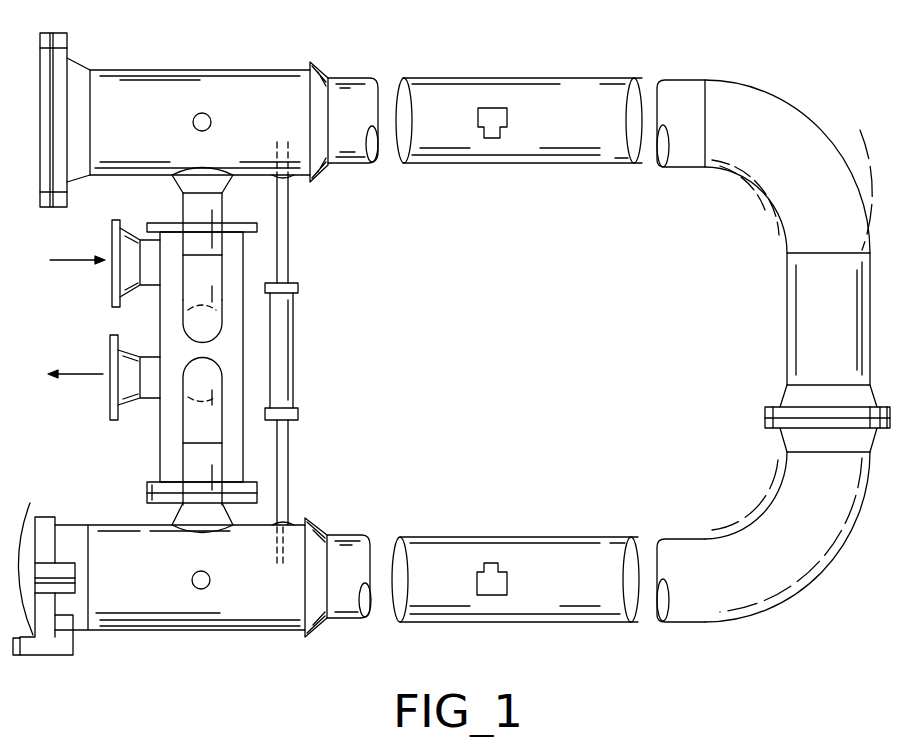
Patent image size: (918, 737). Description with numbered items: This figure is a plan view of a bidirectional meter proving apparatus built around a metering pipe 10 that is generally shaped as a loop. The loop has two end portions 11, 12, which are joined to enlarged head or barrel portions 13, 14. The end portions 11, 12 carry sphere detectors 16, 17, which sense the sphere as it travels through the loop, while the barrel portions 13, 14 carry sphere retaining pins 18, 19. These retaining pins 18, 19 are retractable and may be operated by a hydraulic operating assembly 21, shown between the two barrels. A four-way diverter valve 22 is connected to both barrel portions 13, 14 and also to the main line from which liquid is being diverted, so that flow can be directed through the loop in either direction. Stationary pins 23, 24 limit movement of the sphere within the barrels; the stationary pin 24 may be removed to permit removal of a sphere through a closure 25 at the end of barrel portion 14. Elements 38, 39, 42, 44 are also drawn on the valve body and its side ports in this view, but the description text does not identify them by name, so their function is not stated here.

The metering pipe 10 is at (600, 72).
The end portion 11 is at (366, 75).
The end portion 12 is at (357, 620).
The barrel portion 13 is at (238, 68).
The barrel portion 14 is at (165, 632).
The sphere detector 16 is at (500, 107).
The sphere detector 17 is at (504, 570).
The sphere retaining pin 18 is at (289, 160).
The sphere retaining pin 19 is at (293, 548).
The hydraulic operating assembly 21 is at (294, 345).
The four-way diverter valve 22 is at (158, 443).
The stationary pin 23 is at (196, 113).
The stationary pin 24 is at (192, 574).
The closure 25 is at (44, 568).
The lower tube 38 is at (182, 464).
The outlet port 39 is at (110, 415).
The inlet port 42 is at (112, 296).
The upper stem 44 is at (183, 203).